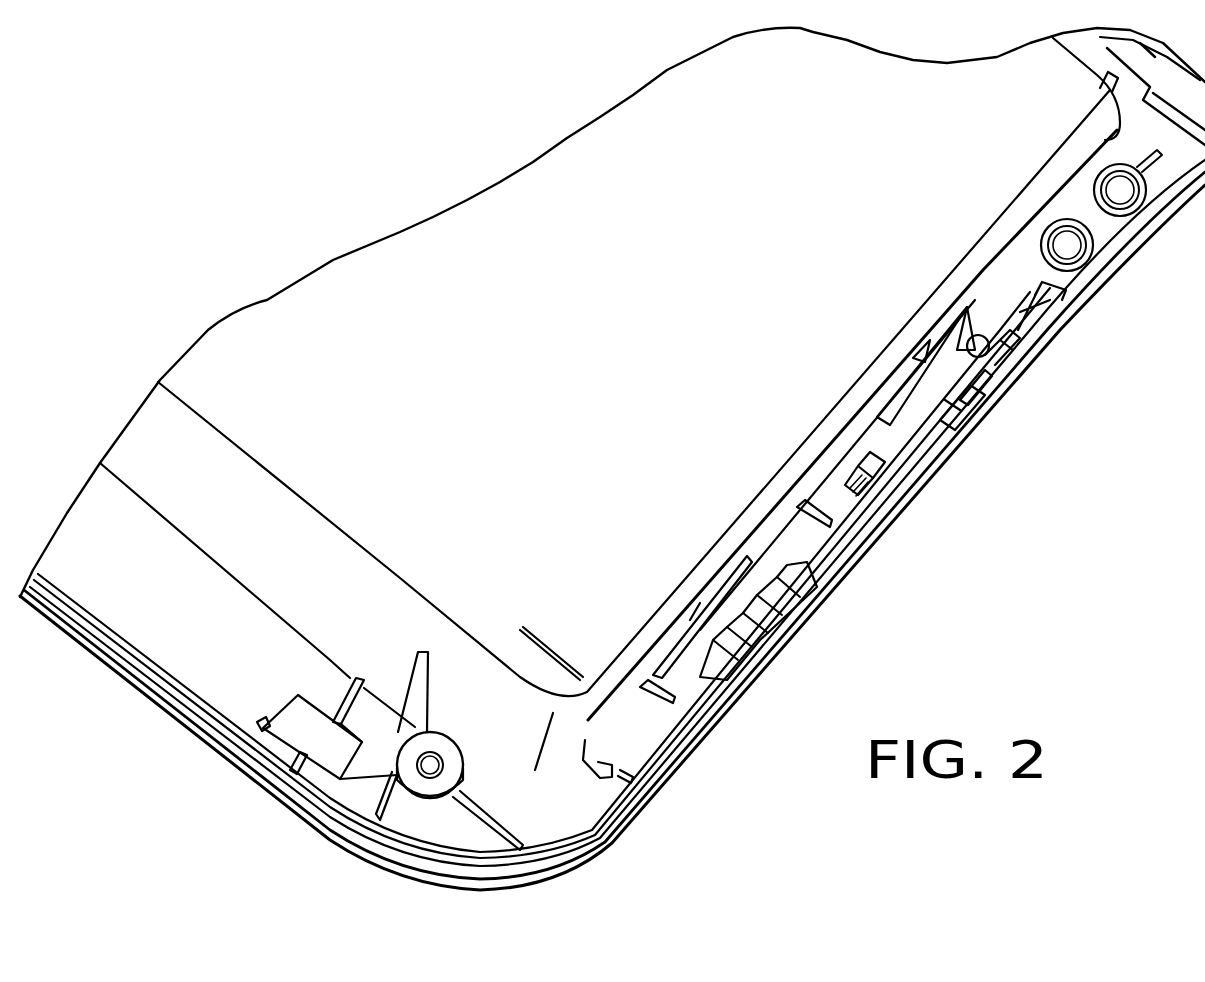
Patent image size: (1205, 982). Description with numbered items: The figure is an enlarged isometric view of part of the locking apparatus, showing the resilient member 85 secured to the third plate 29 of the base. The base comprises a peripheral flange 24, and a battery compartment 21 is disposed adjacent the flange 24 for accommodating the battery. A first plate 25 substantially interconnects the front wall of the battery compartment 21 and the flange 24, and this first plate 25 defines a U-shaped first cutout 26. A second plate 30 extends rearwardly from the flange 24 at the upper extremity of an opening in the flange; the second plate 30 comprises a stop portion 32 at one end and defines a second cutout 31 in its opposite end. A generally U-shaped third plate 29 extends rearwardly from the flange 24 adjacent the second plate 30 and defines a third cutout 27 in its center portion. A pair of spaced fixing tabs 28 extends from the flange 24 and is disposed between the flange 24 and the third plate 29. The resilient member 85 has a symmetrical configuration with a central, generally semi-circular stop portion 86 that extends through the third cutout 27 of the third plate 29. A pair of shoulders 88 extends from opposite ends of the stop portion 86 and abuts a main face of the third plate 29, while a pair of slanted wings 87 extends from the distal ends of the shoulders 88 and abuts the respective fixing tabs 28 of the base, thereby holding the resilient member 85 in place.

The battery compartment 21 is at (410, 295).
The peripheral flange 24 is at (930, 477).
The first plate 25 is at (593, 747).
The first cutout 26 is at (640, 807).
The third cutout 27 is at (1013, 350).
The fixing tabs 28 is at (977, 393).
The third plate 29 is at (1040, 297).
The second plate 30 is at (830, 542).
The second cutout 31 is at (900, 507).
The stop portion 32 is at (807, 590).
The resilient member 85 is at (987, 373).
The stop portion 86 is at (953, 347).
The slanted wings 87 is at (967, 383).
The shoulders 88 is at (960, 363).